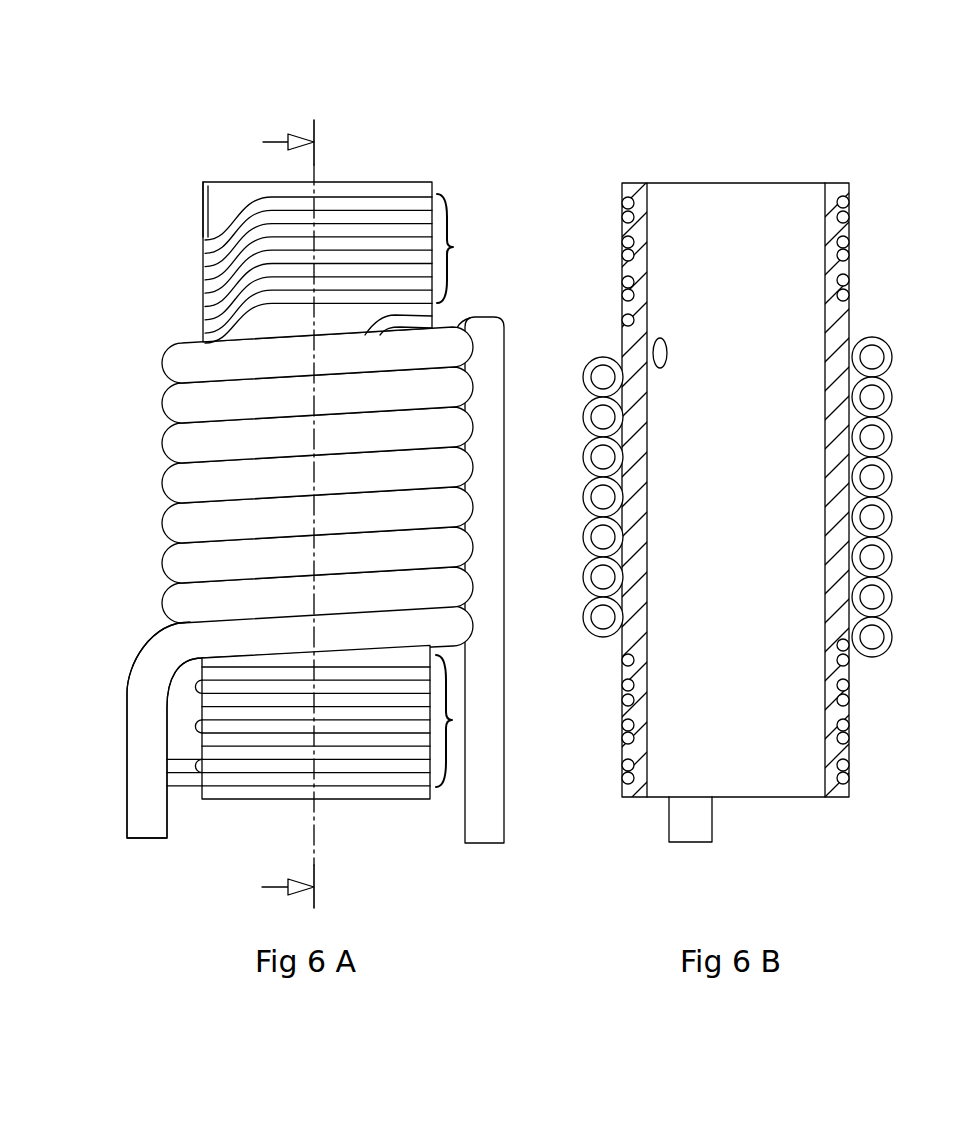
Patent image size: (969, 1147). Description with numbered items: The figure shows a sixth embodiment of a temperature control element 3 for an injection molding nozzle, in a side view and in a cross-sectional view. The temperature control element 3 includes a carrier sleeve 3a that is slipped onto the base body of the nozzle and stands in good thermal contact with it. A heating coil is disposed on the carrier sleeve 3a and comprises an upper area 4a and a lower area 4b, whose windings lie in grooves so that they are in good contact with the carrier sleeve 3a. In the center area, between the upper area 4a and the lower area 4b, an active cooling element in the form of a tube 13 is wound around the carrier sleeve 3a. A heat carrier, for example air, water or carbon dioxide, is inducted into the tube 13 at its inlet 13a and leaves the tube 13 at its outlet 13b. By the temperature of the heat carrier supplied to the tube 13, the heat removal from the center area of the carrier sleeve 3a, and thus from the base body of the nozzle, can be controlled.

In FIG. 6A, the temperature control element 3 is at (315, 457).
In FIG. 6A, the carrier sleeve 3a is at (217, 192).
In FIG. 6B, the carrier sleeve 3a is at (835, 190).
In FIG. 6A, the upper area of heating coil 4a is at (354, 262).
In FIG. 6A, the lower area of heating coil 4b is at (452, 716).
In FIG. 6A, the tube 13 is at (455, 346).
In FIG. 6B, the tube 13 is at (598, 416).
In FIG. 6A, the inlet 13a is at (138, 822).
In FIG. 6A, the outlet 13b is at (488, 828).
In FIG. 6B, the outlet 13b is at (698, 831).